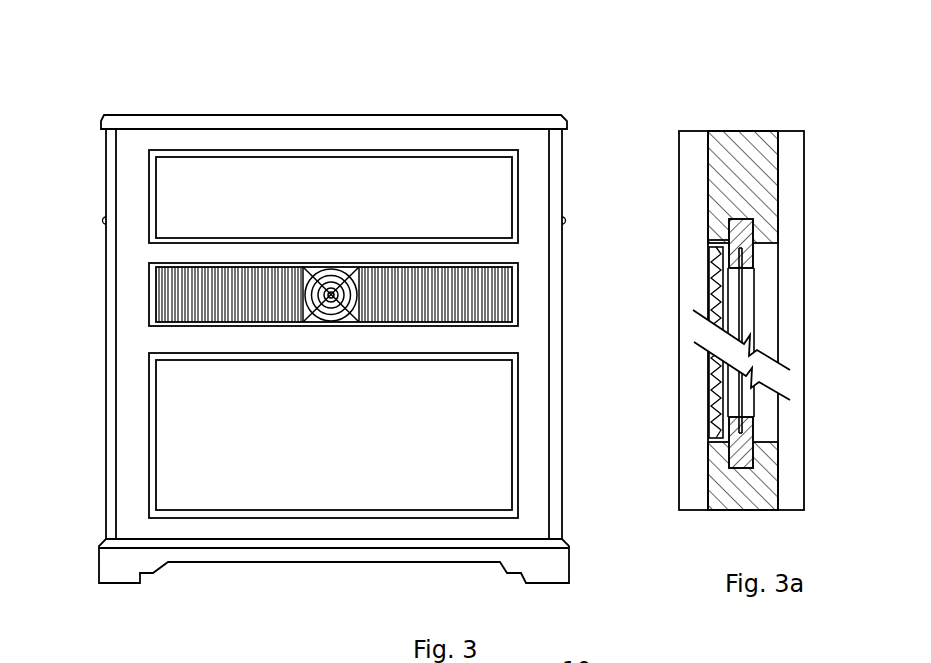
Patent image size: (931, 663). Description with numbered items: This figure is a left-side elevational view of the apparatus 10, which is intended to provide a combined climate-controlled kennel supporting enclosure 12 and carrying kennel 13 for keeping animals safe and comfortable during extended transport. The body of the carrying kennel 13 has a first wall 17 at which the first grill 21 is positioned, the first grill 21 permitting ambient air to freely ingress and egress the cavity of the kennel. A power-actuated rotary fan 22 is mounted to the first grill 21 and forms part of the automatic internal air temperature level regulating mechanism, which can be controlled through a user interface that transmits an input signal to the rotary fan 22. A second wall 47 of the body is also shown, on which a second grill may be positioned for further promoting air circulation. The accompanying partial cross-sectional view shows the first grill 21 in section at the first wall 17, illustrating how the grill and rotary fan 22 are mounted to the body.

In FIG. 3, the apparatus 10 is at (421, 97).
In FIG. 3, the climate-controlled kennel supporting enclosure 12 is at (567, 135).
In FIG. 3, the carrying kennel 13 is at (113, 160).
In FIG. 3, the second wall 47 is at (139, 259).
In FIG. 3, the first grill 21 is at (178, 328).
In FIG. 3A, the first grill 21 is at (742, 323).
In FIG. 3, the power-actuated rotary fan 22 is at (331, 293).
In FIG. 3A, the power-actuated rotary fan 22 is at (762, 272).
In FIG. 3A, the first wall 17 is at (753, 227).